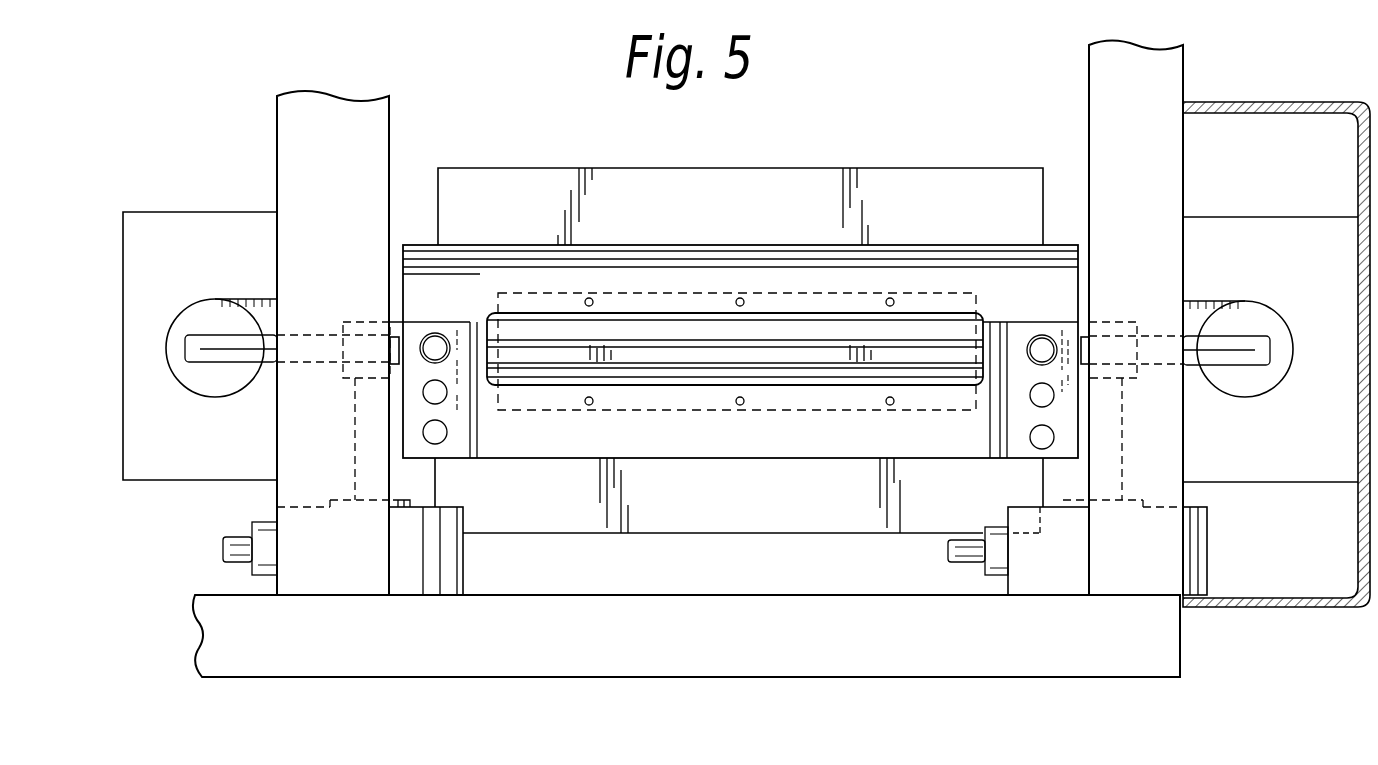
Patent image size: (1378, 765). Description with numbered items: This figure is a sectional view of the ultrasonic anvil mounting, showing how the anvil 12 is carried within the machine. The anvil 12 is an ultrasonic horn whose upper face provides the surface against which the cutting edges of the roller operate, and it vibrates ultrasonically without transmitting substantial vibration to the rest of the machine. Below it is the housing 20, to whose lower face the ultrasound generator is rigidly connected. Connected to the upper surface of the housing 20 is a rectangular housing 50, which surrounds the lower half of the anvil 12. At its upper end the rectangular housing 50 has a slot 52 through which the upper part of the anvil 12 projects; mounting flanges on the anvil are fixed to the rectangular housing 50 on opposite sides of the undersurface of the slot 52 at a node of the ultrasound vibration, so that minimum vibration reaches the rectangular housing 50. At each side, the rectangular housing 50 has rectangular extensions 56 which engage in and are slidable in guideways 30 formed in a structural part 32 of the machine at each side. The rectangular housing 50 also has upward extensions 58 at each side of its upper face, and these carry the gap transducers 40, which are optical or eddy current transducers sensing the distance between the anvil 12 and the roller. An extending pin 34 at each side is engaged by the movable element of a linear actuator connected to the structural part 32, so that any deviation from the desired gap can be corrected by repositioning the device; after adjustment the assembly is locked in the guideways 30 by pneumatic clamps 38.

The anvil 12 is at (657, 348).
The housing 20 is at (895, 178).
The guideways 30 is at (355, 322).
The structural part 32 is at (292, 122).
The extending pin 34 is at (247, 343).
The pneumatic clamps 38 is at (435, 568).
The gap transducers 40 is at (437, 345).
The rectangular housing 50 is at (965, 258).
The slot 52 is at (793, 326).
The rectangular extensions 56 is at (357, 378).
The upward extensions 58 is at (457, 442).